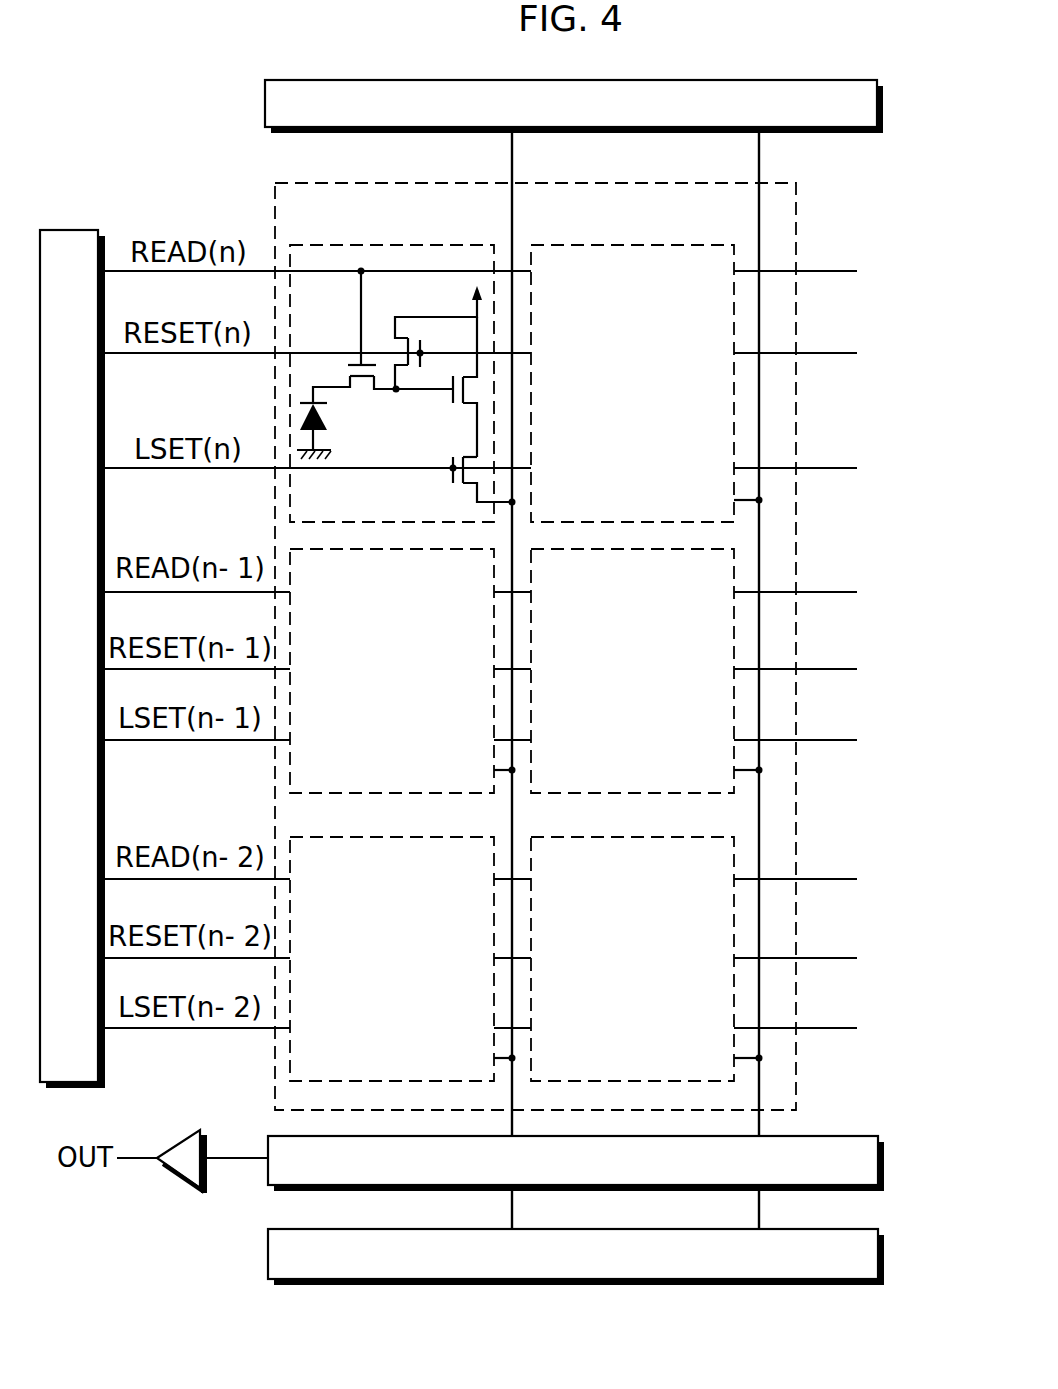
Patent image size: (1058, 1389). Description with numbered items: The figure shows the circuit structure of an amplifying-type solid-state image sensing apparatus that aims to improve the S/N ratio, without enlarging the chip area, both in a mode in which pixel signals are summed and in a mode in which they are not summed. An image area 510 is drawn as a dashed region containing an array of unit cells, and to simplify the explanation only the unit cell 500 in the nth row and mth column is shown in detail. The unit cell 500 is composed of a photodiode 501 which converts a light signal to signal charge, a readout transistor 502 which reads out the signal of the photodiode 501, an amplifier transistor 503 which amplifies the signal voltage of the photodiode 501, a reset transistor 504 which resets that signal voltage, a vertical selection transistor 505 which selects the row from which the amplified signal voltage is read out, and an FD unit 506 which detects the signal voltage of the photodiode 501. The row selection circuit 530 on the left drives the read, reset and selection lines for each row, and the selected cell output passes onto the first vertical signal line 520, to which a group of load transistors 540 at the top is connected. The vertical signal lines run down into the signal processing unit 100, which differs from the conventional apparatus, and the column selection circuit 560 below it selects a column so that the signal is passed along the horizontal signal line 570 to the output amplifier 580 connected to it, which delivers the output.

The signal processing unit 100 is at (824, 1136).
The unit cell 500 is at (425, 245).
The photodiode 501 is at (320, 432).
The readout transistor 502 is at (360, 388).
The amplifier transistor 503 is at (447, 397).
The reset transistor 504 is at (400, 347).
The vertical selection transistor 505 is at (452, 472).
The FD unit 506 is at (398, 388).
The image area 510 is at (797, 228).
The first vertical signal line 520 is at (514, 823).
The row selection circuit 530 is at (72, 230).
The group of load transistors 540 is at (800, 80).
The column selection circuit 560 is at (268, 1250).
The horizontal signal line 570 is at (235, 1160).
The output amplifier 580 is at (178, 1178).